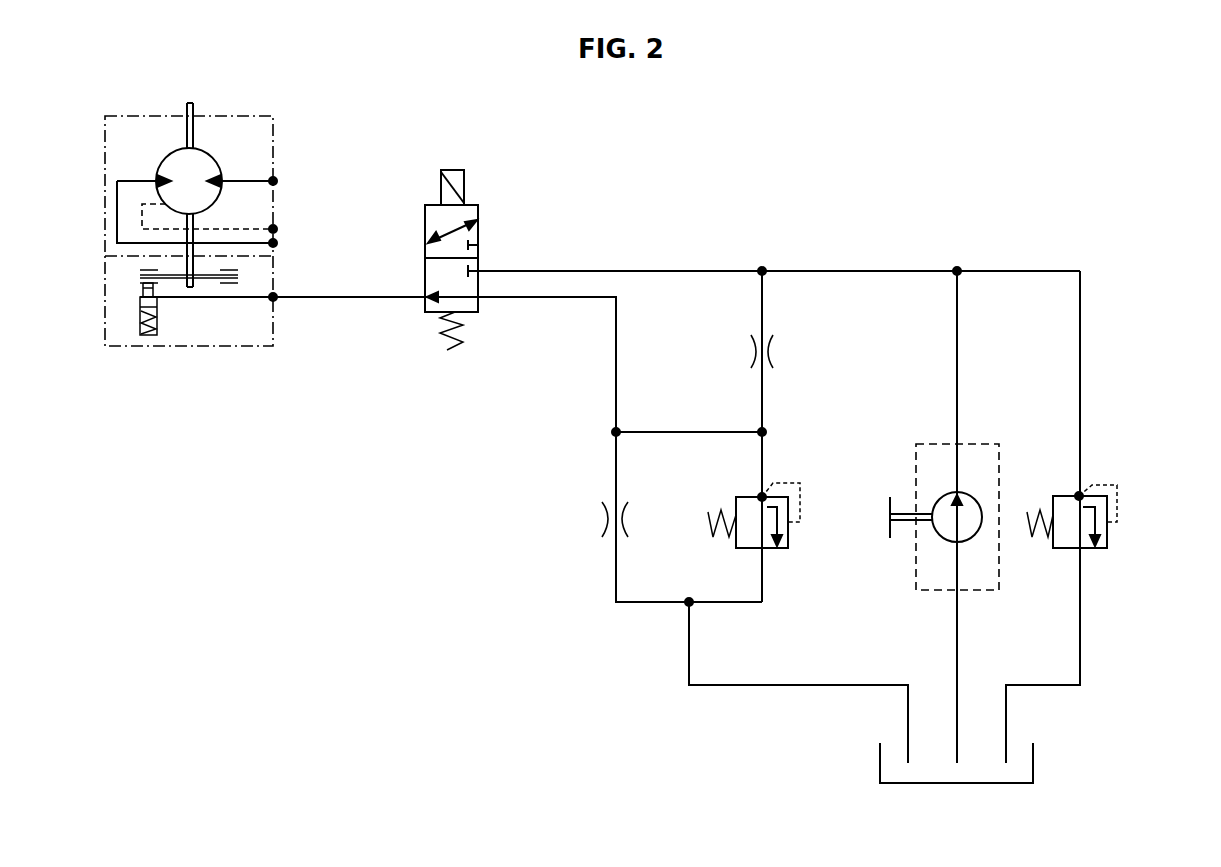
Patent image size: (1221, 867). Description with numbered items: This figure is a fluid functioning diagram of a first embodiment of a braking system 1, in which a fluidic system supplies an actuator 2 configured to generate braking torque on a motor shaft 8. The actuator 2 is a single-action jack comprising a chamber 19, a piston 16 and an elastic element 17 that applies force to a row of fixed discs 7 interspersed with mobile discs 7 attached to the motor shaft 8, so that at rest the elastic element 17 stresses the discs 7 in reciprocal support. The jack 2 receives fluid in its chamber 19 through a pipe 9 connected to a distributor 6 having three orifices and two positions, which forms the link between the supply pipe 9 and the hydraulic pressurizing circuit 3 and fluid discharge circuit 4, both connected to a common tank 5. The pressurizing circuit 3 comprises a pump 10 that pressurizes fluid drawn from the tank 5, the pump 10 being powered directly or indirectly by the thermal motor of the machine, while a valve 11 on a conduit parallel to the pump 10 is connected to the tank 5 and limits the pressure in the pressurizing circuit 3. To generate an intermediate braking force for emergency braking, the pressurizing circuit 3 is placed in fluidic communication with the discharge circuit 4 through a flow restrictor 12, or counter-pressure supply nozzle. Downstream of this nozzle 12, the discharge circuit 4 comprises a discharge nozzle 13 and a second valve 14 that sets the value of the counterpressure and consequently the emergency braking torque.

The braking system 1 is at (895, 167).
The actuator 2 is at (165, 317).
The hydraulic pressurizing circuit 3 is at (1103, 307).
The fluid discharge circuit 4 is at (629, 657).
The tank 5 is at (1035, 763).
The distributor 6 is at (484, 232).
The discs 7 is at (128, 275).
The motor shaft 8 is at (190, 290).
The pipe 9 is at (347, 297).
The pump 10 is at (988, 487).
The valve 11 is at (1128, 501).
The flow restrictor 12 is at (779, 350).
The discharge nozzle 13 is at (598, 518).
The second valve 14 is at (808, 501).
The piston 16 is at (140, 307).
The elastic element 17 is at (140, 325).
The chamber 19 is at (140, 297).